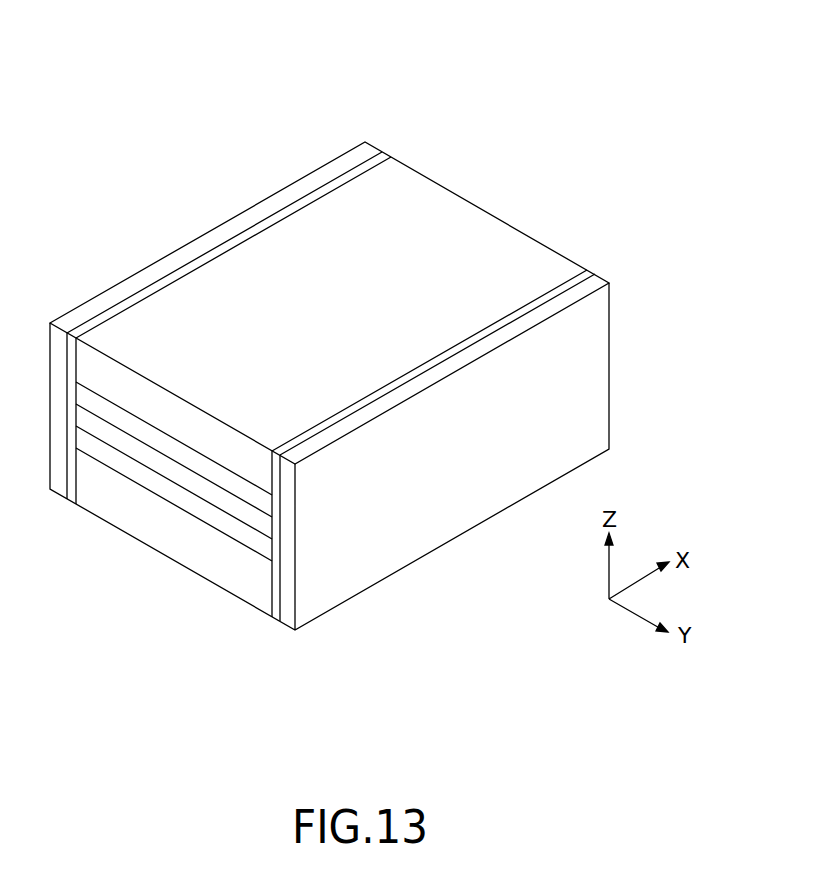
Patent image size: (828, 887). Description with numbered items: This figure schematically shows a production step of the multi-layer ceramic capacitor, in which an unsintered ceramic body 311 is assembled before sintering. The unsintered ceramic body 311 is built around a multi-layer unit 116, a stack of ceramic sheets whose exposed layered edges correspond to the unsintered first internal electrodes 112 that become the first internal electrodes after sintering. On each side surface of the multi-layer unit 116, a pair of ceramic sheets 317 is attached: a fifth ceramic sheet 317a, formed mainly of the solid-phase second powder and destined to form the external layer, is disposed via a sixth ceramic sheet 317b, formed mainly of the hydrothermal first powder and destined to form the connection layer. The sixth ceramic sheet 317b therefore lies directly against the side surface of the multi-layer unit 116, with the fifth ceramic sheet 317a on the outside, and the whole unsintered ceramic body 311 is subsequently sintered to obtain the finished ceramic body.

The unsintered ceramic body 311 is at (329, 393).
The multi-layer unit 116 is at (423, 197).
The side margin ceramic sheets 317 is at (331, 393).
The fifth ceramic sheet 317a is at (348, 160).
The sixth ceramic sheet 317b is at (372, 72).
The unsintered first internal electrodes 112 is at (197, 455).